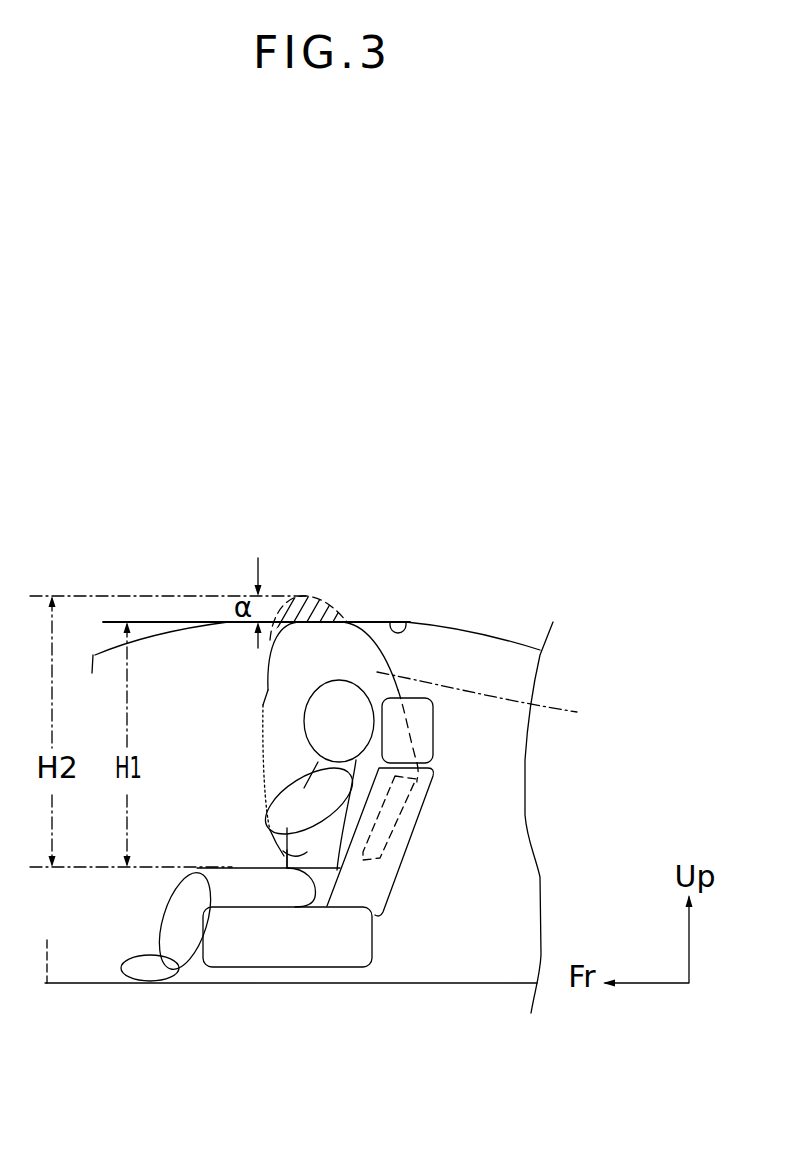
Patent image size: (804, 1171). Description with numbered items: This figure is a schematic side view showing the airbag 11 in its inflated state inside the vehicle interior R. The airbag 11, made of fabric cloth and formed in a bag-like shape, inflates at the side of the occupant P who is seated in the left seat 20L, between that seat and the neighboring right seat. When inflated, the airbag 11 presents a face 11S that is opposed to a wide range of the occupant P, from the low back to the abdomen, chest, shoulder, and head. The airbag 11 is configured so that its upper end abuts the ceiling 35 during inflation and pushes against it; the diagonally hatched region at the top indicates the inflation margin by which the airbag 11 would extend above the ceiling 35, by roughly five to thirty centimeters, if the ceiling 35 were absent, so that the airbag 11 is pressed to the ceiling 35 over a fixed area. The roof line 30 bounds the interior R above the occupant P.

The airbag 11 is at (258, 705).
The face 11S is at (499, 700).
The roof 30 is at (503, 630).
The ceiling 35 is at (410, 620).
The left seat 20L is at (374, 940).
The occupant P is at (274, 851).
The vehicle interior R is at (483, 850).